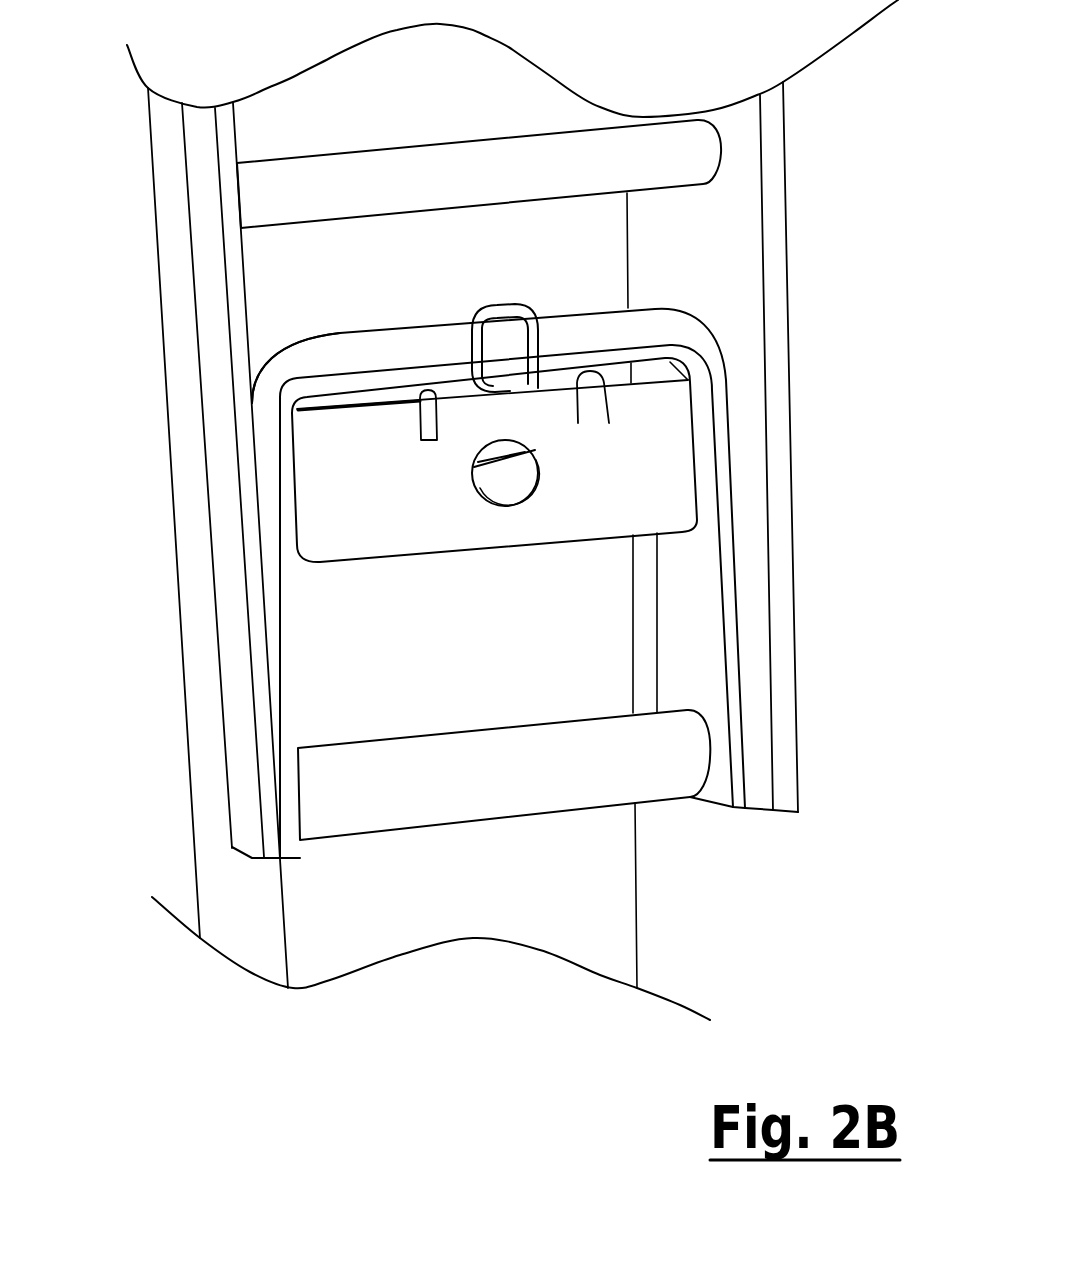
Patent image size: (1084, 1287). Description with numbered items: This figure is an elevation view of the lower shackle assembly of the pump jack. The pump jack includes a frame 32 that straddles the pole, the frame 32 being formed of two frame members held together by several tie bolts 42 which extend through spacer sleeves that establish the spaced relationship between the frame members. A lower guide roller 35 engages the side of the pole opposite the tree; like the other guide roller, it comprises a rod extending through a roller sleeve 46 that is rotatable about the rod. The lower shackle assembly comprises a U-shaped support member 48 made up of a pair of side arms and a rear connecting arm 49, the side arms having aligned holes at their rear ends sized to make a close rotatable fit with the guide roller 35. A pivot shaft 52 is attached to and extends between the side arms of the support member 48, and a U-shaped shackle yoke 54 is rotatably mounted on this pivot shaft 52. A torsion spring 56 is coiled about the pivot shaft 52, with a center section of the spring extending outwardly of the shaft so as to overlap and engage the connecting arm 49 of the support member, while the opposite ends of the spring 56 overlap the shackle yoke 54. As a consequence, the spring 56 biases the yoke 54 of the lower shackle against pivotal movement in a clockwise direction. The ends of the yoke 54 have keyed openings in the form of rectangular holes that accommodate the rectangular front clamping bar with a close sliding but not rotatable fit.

The frame 32 is at (770, 193).
The lower guide roller 35 is at (528, 812).
The tie bolts 42 is at (333, 170).
The roller sleeve 46 is at (447, 747).
The U-shaped support member 48 is at (717, 357).
The rear connecting arm 49 is at (327, 349).
The pivot shaft 52 is at (537, 453).
The U-shaped shackle yoke 54 is at (388, 518).
The torsion spring 56 is at (522, 302).